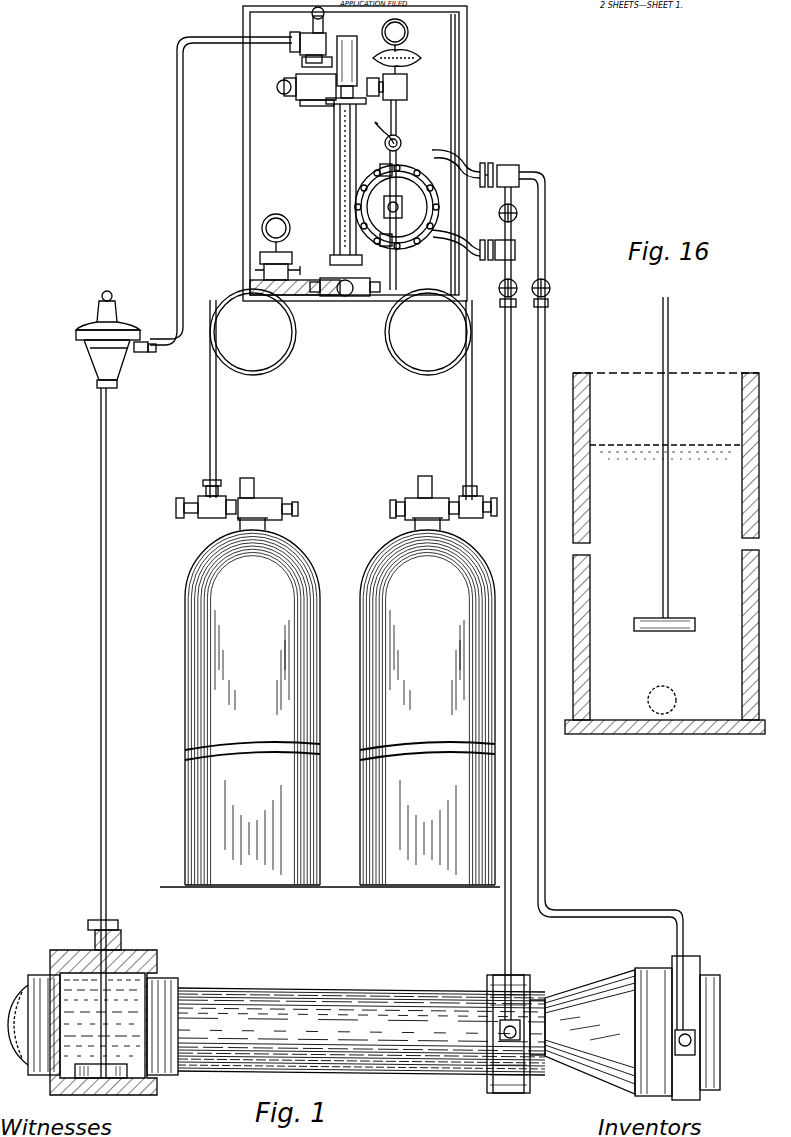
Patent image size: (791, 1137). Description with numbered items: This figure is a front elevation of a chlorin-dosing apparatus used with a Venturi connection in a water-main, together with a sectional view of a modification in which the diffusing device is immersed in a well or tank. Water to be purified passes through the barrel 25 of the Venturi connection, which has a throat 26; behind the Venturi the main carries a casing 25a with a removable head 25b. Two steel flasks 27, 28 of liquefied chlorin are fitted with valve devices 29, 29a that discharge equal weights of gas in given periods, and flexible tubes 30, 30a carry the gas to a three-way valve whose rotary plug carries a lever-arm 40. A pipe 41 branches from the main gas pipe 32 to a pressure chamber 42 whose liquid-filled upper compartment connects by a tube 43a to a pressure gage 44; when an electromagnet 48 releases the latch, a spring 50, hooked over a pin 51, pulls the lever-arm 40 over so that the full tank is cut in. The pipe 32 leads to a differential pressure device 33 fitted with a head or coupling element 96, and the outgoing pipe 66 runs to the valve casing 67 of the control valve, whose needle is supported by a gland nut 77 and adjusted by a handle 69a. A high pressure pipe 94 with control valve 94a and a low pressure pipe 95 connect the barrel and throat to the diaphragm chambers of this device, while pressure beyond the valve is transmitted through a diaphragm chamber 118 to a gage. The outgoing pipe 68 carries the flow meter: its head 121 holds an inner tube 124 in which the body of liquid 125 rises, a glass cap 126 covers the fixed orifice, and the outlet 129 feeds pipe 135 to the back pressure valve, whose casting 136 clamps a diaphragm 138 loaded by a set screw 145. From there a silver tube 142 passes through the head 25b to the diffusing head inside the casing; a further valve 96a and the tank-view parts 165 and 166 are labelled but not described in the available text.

In FIG. 1, the pipe 135 is at (177, 158).
In FIG. 1, the inner tube 124 is at (300, 64).
In FIG. 1, the head 121 is at (280, 90).
In FIG. 1, the glass chamber or cap 126 is at (300, 98).
In FIG. 1, the body of liquid 125 is at (336, 172).
In FIG. 1, the outlet 129 is at (408, 30).
In FIG. 1, the diaphragm chamber 118 is at (420, 58).
In FIG. 1, the outgoing pipe 68 is at (405, 105).
In FIG. 1, the handle 69a is at (395, 130).
In FIG. 1, the valve casing 67 is at (410, 160).
In FIG. 1, the gland nut 77 is at (420, 175).
In FIG. 1, the differential pressure device 33 is at (397, 220).
In FIG. 1, the outgoing pipe 66 is at (440, 165).
In FIG. 1, the valve on pipe 96a is at (515, 284).
In FIG. 1, the head or coupling element 96 is at (410, 207).
In FIG. 1, the high pressure pipe 94 is at (546, 828).
In FIG. 1, the control valve 94a is at (551, 290).
In FIG. 1, the pressure gage 44 is at (262, 225).
In FIG. 1, the tube 43a is at (260, 258).
In FIG. 1, the pressure chamber 42 is at (262, 270).
In FIG. 1, the pin 51 is at (350, 300).
In FIG. 1, the lever-arm 40 is at (350, 300).
In FIG. 1, the electromagnet 48 is at (365, 300).
In FIG. 1, the pipe 41 is at (258, 300).
In FIG. 1, the spring 50 is at (300, 298).
In FIG. 1, the pipe 32 is at (420, 300).
In FIG. 1, the flexible tube 30a is at (216, 433).
In FIG. 1, the flexible tube 30 is at (466, 433).
In FIG. 1, the valve device 29a is at (262, 502).
In FIG. 1, the valve device 29 is at (455, 500).
In FIG. 1, the steel flask 28 is at (252, 701).
In FIG. 1, the steel flask 27 is at (427, 701).
In FIG. 1, the set screw 145 is at (112, 295).
In FIG. 1, the casing section 136 is at (104, 360).
In FIG. 1, the silver tube 142 is at (103, 580).
In FIG. 16, the silver tube 142 is at (669, 337).
In FIG. 1, the removable head 25b is at (70, 952).
In FIG. 1, the diaphragm 138 is at (100, 1082).
In FIG. 16, the diaphragm 138 is at (664, 641).
In FIG. 1, the casing 25a is at (140, 1085).
In FIG. 1, the low pressure pipe 95 is at (517, 1019).
In FIG. 1, the throat 26 is at (532, 1078).
In FIG. 1, the barrel 25 is at (655, 978).
In FIG. 16, the vessel 165 is at (735, 392).
In FIG. 16, the ball 166 is at (658, 715).